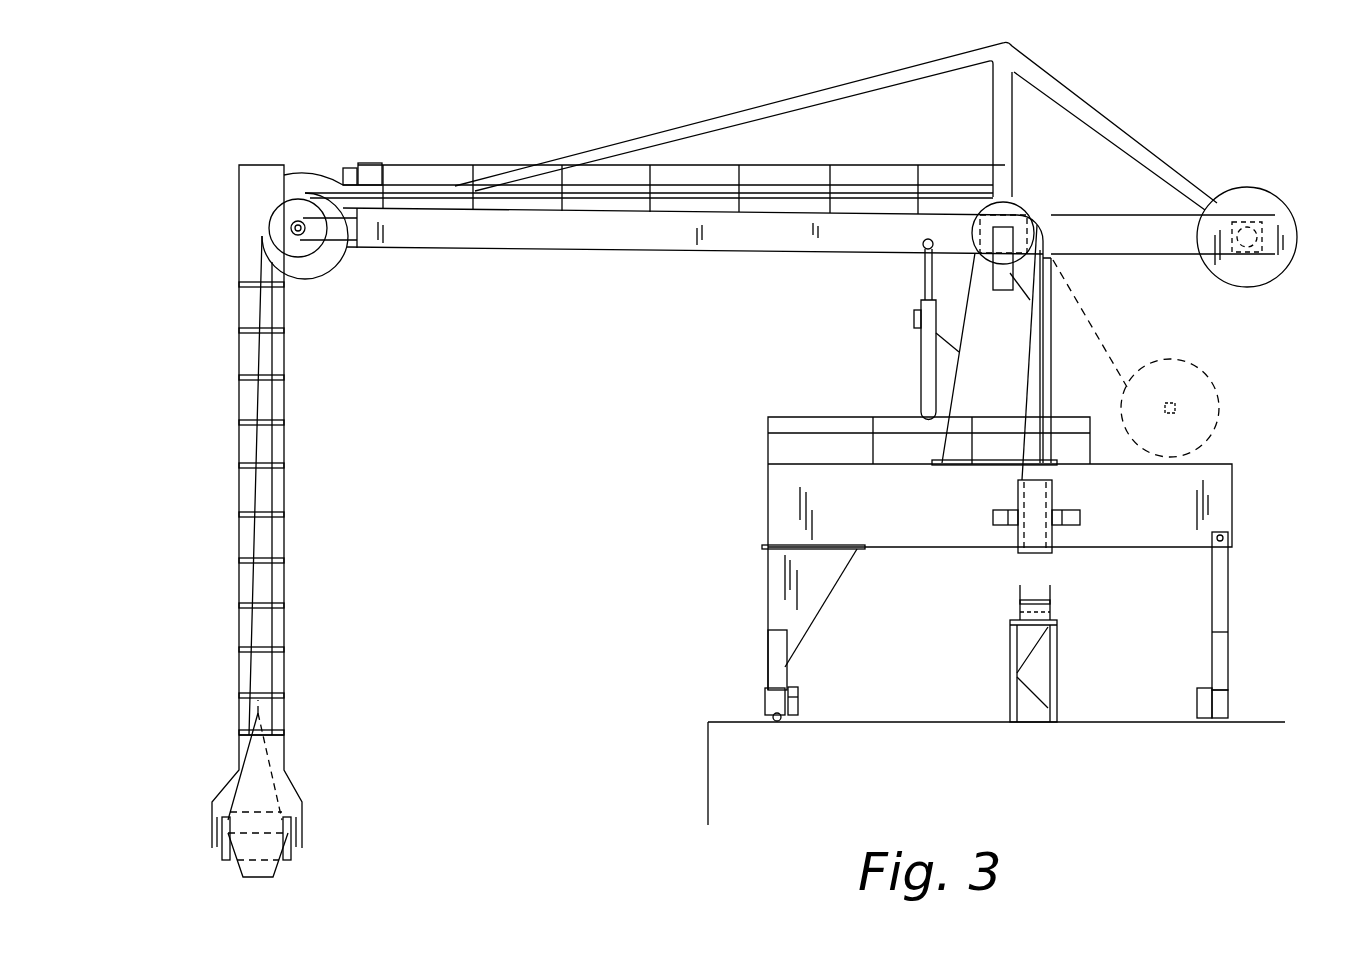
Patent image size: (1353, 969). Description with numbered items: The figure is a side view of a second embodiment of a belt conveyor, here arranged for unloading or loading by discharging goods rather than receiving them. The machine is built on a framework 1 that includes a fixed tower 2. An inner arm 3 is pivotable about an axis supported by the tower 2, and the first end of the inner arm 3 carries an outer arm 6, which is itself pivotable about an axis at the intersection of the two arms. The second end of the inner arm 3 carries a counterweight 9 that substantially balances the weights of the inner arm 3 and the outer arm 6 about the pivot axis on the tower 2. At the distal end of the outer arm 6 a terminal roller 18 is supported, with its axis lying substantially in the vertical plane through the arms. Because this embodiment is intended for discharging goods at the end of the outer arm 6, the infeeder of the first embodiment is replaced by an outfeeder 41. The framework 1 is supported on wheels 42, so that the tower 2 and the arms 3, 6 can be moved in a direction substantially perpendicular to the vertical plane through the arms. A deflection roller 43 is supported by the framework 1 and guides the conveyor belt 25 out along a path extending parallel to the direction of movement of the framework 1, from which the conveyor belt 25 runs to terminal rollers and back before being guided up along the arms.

The framework 1 is at (768, 503).
The fixed tower 2 is at (1012, 345).
The inner arm 3 is at (663, 252).
The outer arm 6 is at (288, 452).
The counterweight 9 is at (1270, 206).
The terminal roller 18 is at (222, 855).
The conveyor belt 25 is at (890, 200).
The outfeeder 41 is at (283, 870).
The wheels 42 is at (780, 724).
The deflection roller 43 is at (1055, 490).